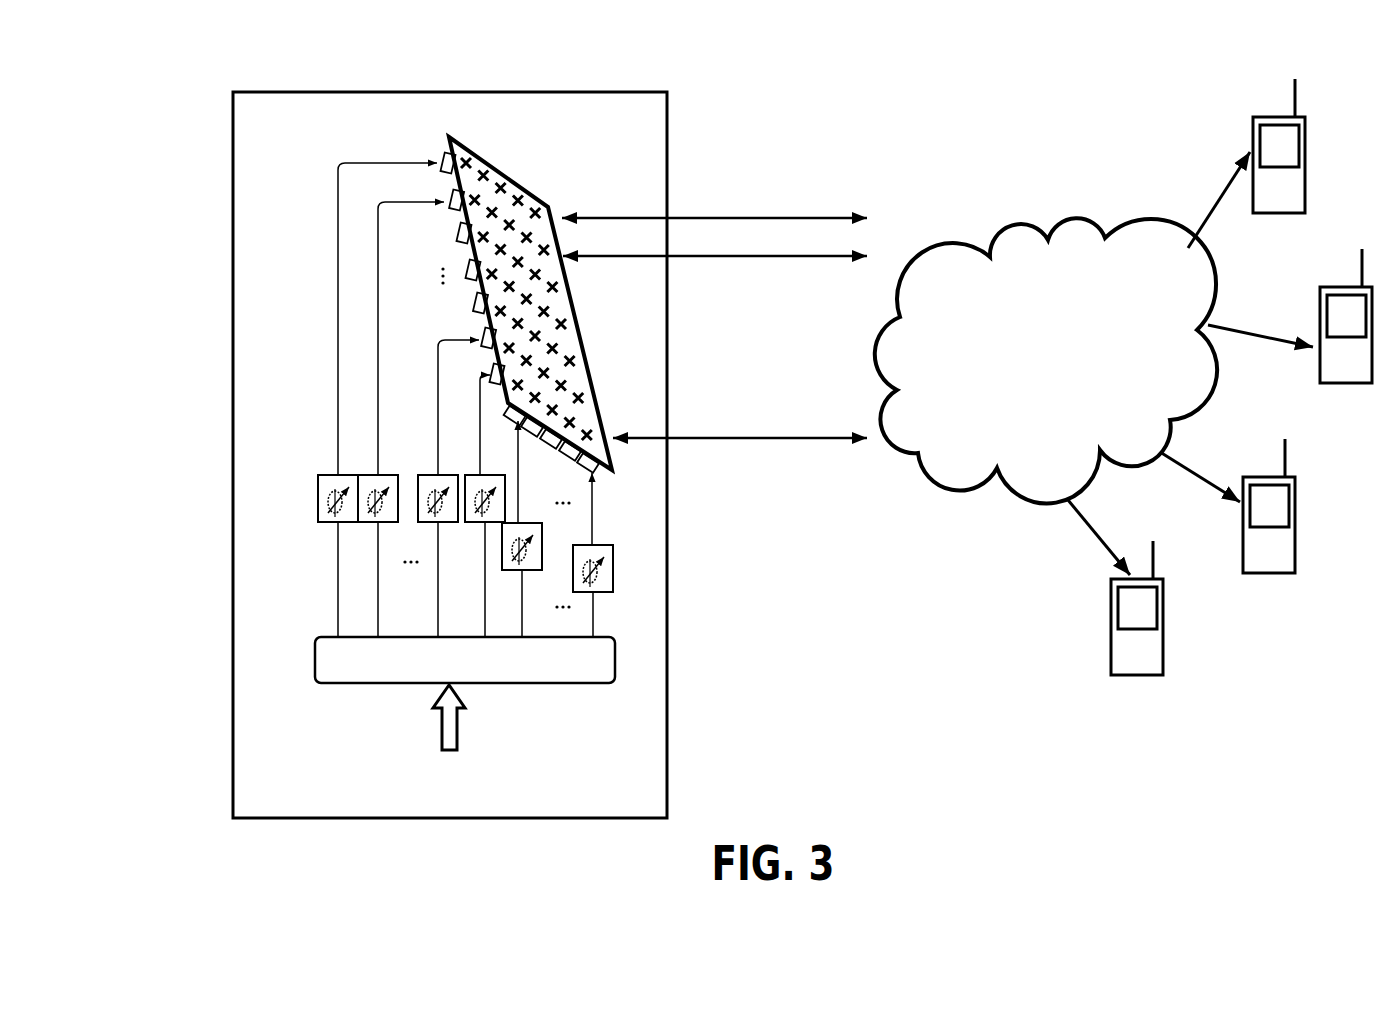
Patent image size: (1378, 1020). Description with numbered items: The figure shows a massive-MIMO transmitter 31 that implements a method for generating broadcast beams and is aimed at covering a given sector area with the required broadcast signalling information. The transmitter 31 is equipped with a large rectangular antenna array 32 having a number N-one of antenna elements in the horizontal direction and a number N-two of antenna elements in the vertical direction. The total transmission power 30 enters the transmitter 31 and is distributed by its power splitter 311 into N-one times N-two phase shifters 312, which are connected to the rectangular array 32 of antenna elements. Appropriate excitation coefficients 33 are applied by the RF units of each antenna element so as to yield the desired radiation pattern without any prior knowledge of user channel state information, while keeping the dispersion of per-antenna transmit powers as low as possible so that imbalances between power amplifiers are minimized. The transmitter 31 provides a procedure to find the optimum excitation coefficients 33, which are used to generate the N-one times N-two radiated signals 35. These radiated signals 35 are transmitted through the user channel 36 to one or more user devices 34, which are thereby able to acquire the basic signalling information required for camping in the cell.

The total transmission power 30 is at (448, 725).
The massive-MIMO transmitter 31 is at (625, 117).
The rectangular antenna array 32 is at (498, 168).
The excitation coefficients 33 is at (358, 162).
The power splitter 311 is at (320, 662).
The phase shifters 312 is at (317, 477).
The user devices 34 is at (1253, 130).
The radiated signals 35 is at (738, 440).
The user channel 36 is at (1020, 273).